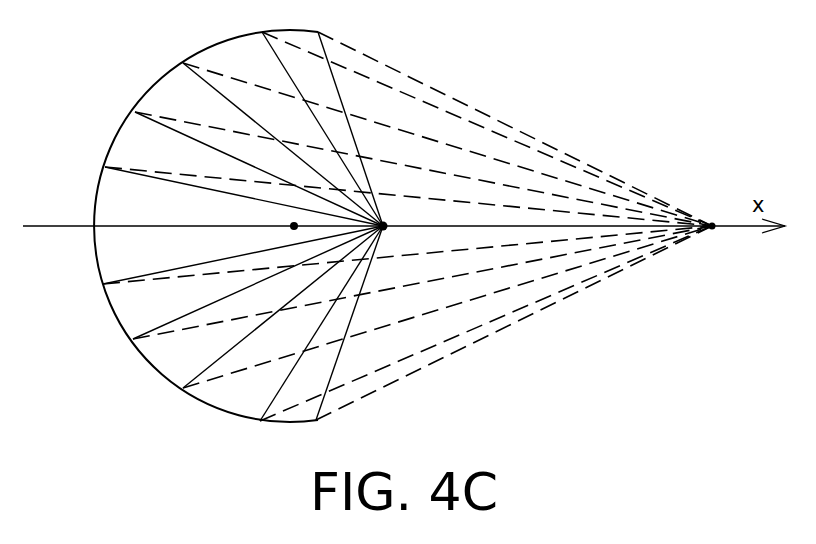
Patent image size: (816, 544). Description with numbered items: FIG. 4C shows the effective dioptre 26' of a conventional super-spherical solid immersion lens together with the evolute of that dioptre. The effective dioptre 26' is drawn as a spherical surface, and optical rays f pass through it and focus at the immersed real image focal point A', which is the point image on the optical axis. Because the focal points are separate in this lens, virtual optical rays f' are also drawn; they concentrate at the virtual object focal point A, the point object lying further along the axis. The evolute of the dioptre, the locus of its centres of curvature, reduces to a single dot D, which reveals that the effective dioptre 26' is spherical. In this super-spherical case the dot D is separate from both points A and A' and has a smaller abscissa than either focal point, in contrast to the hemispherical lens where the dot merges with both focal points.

The effective dioptre 26' is at (182, 226).
The optical rays f is at (250, 229).
The virtual optical rays f' is at (407, 229).
The virtual object focal point A is at (718, 242).
The immersed real image focal point A' is at (396, 236).
The dot D is at (293, 224).